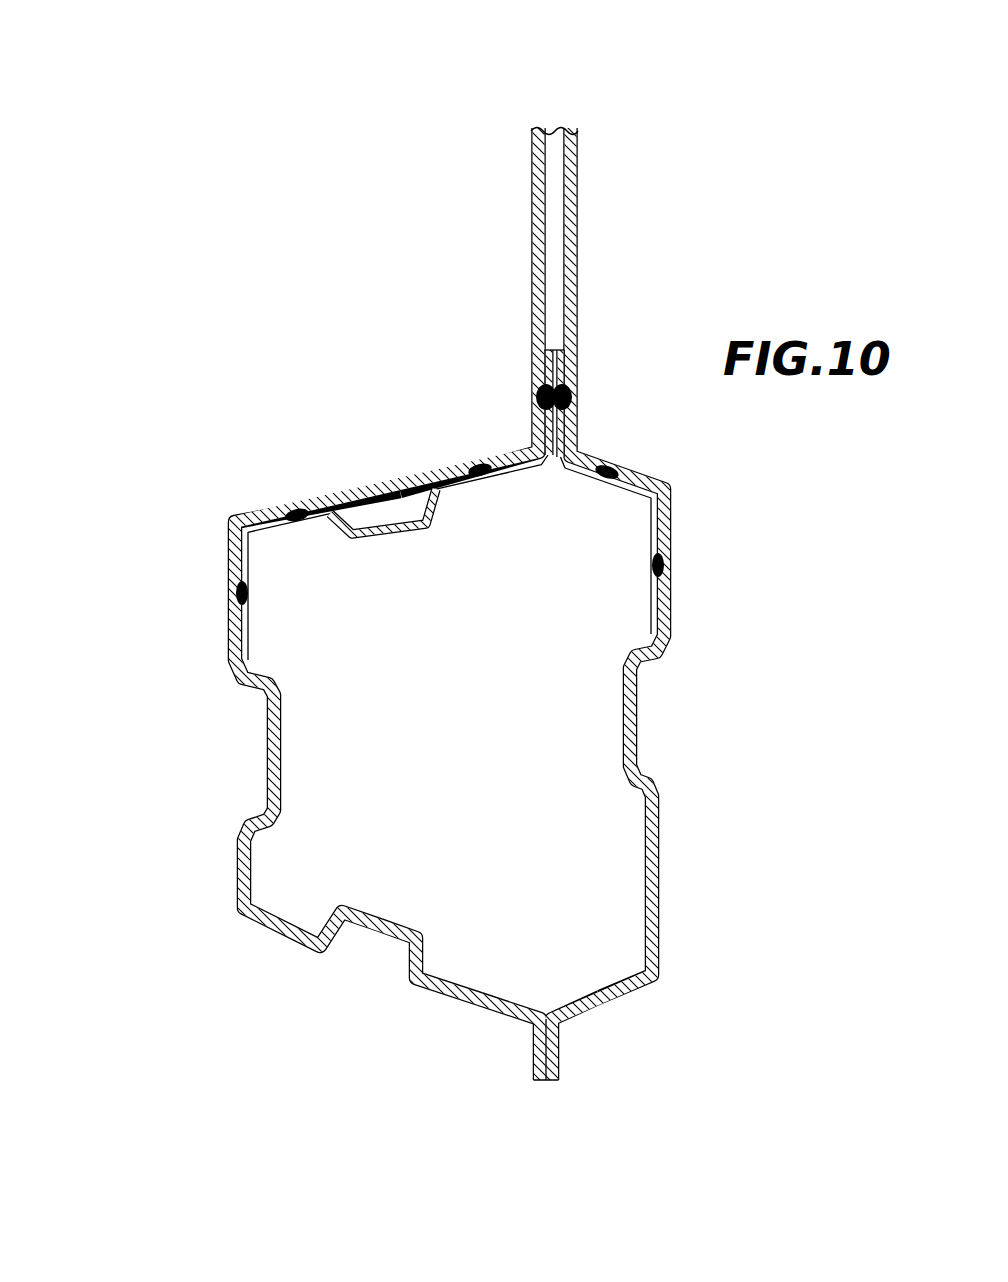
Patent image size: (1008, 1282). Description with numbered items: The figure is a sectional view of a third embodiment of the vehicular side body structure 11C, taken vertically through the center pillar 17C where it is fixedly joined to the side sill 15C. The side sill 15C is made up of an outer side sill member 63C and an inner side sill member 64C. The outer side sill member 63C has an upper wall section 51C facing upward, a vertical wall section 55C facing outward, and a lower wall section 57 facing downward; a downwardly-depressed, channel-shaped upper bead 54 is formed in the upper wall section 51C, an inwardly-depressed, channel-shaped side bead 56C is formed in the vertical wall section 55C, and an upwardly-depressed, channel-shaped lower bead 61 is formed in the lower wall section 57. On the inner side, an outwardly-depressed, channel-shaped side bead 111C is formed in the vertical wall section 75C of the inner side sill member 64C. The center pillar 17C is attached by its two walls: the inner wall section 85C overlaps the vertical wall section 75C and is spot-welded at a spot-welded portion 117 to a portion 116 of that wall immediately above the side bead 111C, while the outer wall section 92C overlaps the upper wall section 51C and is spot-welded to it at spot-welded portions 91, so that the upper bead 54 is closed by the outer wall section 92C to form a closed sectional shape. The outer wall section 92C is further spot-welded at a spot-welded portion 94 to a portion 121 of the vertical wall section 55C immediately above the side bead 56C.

The vehicular side body structure 11C is at (340, 230).
The center pillar 17C is at (545, 112).
The inner wall section 85C is at (578, 216).
The outer wall section 92C is at (531, 270).
The spot-welded portions 91 is at (480, 466).
The spot-welded portion 94 is at (236, 593).
The portion of the vertical wall section 121 is at (252, 622).
The upper bead 54 is at (378, 545).
The upper wall section 51C is at (447, 500).
The portion of the vertical wall section 116 is at (649, 548).
The spot-welded portion 117 is at (672, 560).
The side bead 56C is at (283, 740).
The vertical wall section 55C is at (238, 832).
The outer side sill member 63C is at (218, 872).
The inner side sill member 64C is at (700, 781).
The side bead 111C is at (636, 712).
The vertical wall section 75C is at (660, 838).
The lower bead 61 is at (386, 918).
The lower wall section 57 is at (482, 998).
The side sill 15C is at (305, 1075).